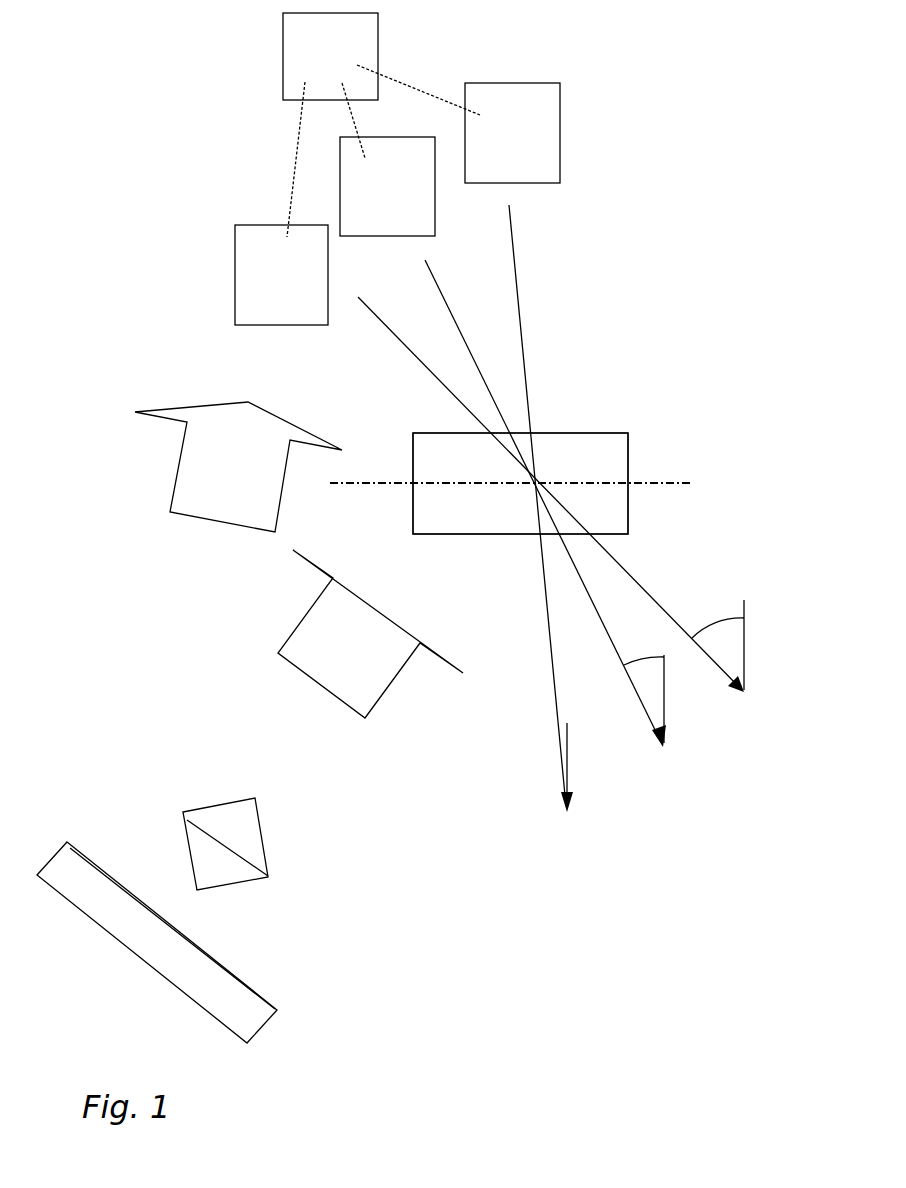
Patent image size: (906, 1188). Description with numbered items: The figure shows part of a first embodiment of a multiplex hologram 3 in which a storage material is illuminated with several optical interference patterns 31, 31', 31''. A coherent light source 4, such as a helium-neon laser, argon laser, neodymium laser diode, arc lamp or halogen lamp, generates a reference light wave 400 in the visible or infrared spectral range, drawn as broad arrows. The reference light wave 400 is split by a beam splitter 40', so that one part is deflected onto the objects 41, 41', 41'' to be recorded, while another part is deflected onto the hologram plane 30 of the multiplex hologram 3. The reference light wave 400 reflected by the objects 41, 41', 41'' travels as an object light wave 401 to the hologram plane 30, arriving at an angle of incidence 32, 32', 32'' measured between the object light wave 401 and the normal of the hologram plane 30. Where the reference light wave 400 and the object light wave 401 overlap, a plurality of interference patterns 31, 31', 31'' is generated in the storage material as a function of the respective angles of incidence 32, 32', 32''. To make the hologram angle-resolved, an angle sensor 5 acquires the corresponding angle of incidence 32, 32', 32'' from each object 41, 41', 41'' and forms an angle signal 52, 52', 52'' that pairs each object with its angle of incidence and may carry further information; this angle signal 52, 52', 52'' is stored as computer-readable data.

The angle sensor 5 is at (336, 63).
The object 41 is at (512, 133).
The object 41' is at (387, 186).
The object 41'' is at (281, 275).
The angle signal 52 is at (189, 143).
The angle signal 52' is at (246, 120).
The angle signal 52'' is at (339, 90).
The multiplex hologram 3 is at (648, 475).
The hologram plane 30 is at (599, 483).
The interference pattern 31 is at (511, 467).
The interference pattern 31' is at (511, 467).
The interference pattern 31'' is at (511, 467).
The object light wave 401 is at (655, 553).
The angle of incidence 32 is at (533, 508).
The angle of incidence 32' is at (545, 503).
The angle of incidence 32'' is at (551, 502).
The reference light wave 400 is at (158, 475).
The optical element 40' is at (178, 844).
The light source 4 is at (142, 951).